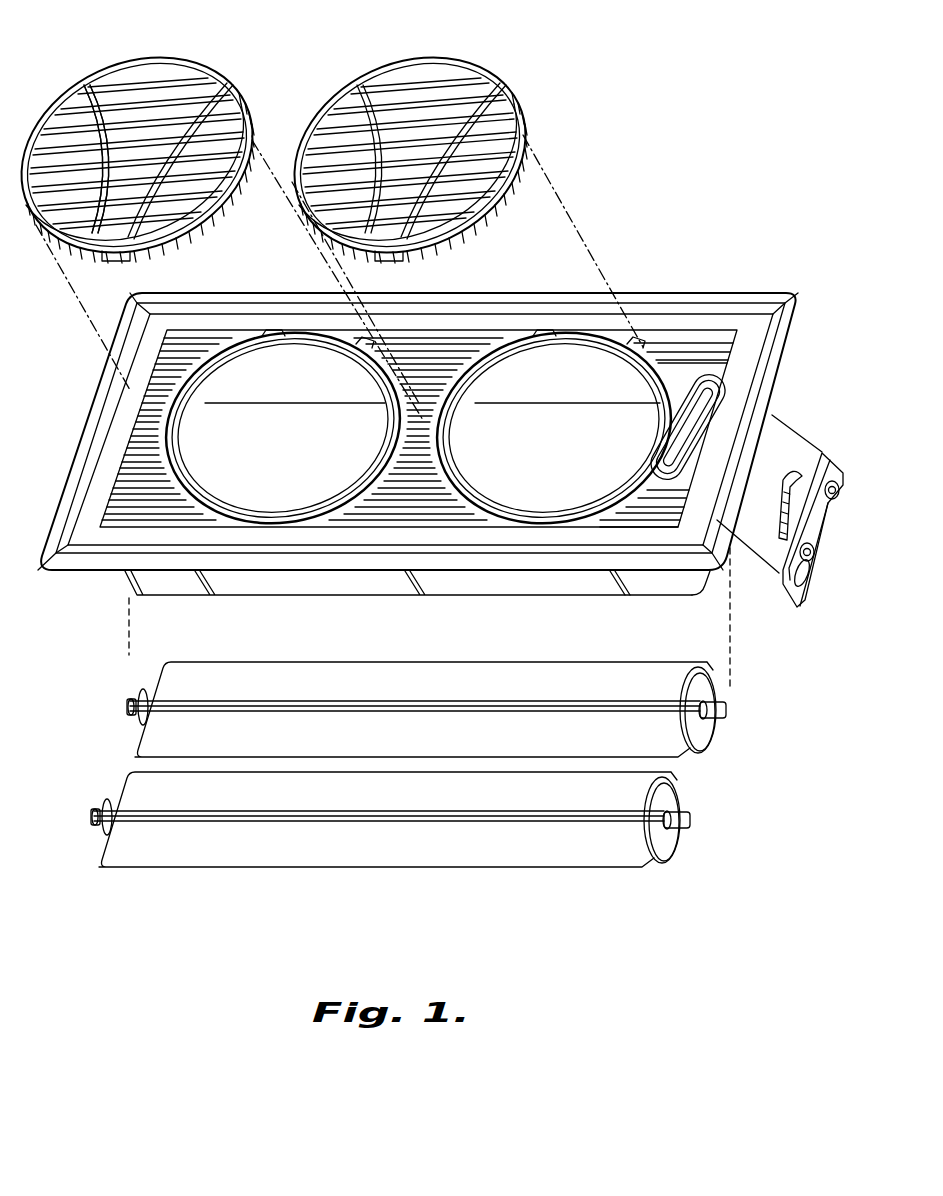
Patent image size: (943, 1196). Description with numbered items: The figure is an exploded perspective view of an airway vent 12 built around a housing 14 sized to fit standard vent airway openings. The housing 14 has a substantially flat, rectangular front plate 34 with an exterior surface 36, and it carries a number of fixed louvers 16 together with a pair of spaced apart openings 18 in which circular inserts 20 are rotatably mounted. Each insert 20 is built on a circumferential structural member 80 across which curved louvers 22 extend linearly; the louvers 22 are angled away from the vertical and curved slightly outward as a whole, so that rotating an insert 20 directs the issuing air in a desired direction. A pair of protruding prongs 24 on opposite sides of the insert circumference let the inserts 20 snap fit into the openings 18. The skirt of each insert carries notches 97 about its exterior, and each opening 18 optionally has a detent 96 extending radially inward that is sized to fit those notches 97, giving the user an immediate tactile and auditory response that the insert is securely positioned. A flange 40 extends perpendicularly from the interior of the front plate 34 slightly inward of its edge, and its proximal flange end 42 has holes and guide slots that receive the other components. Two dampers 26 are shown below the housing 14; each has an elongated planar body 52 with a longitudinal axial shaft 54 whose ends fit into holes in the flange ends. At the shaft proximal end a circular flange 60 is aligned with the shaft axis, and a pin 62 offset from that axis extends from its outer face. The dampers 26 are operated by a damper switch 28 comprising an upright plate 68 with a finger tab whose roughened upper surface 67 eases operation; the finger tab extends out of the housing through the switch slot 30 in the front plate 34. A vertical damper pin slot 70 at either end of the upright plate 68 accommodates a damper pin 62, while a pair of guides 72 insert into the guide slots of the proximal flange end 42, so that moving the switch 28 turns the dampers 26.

The vent 12 is at (437, 459).
The housing 14 is at (431, 470).
The fixed louvers 16 is at (700, 345).
The openings 18 is at (418, 428).
The inserts 20 is at (279, 152).
The curved louvers 22 is at (70, 117).
The prongs 24 is at (118, 258).
The dampers 26 is at (414, 762).
The damper switch 28 is at (820, 523).
The switch slot 30 is at (693, 427).
The front plate 34 is at (77, 537).
The exterior surface 36 is at (745, 343).
The flange 40 is at (162, 590).
The proximal flange end 42 is at (712, 585).
The elongated planar body 52 is at (272, 850).
The damper shaft 54 is at (130, 707).
The circular flange 60 is at (676, 803).
The pin 62 is at (700, 747).
The roughened upper surface 67 is at (786, 497).
The upright plate 68 is at (808, 535).
The damper pin slot 70 is at (805, 585).
The guides 72 is at (836, 492).
The circumferential structural member 80 is at (207, 77).
The detent 96 is at (188, 413).
The notches 97 is at (215, 200).